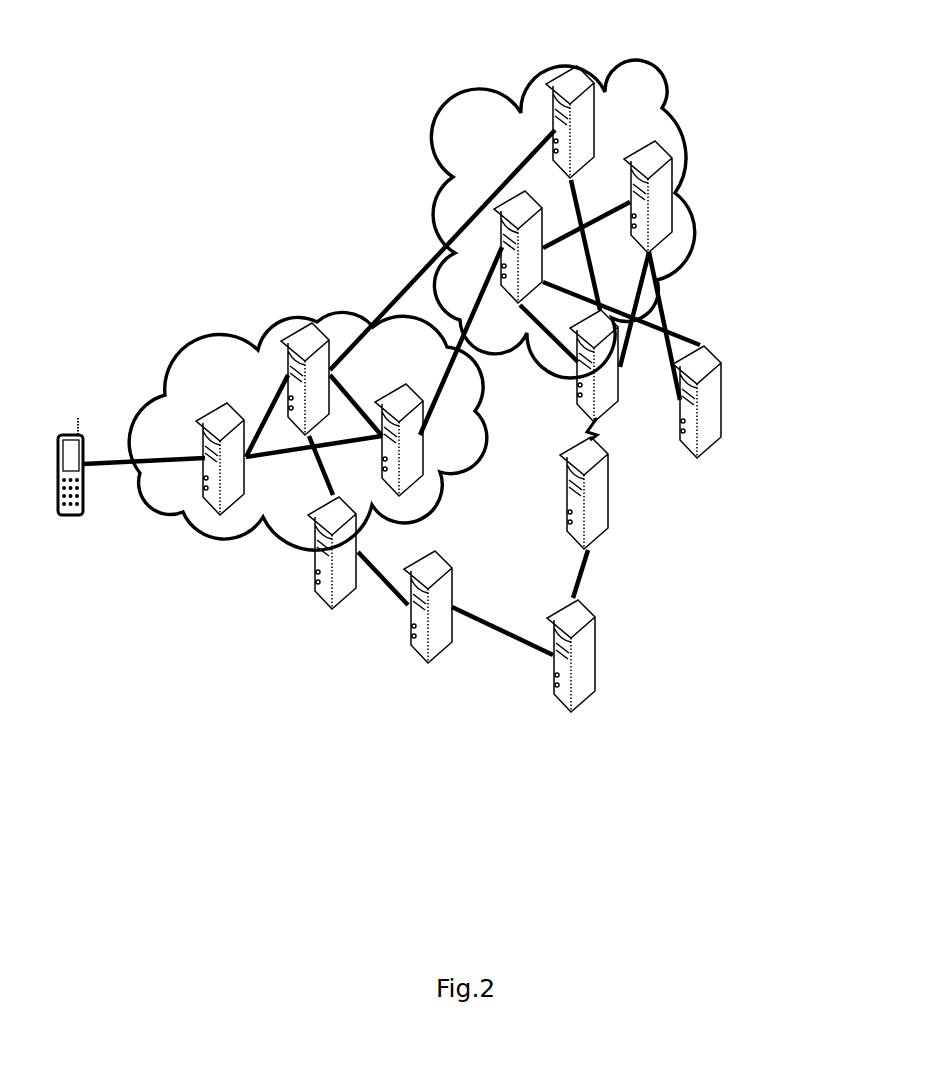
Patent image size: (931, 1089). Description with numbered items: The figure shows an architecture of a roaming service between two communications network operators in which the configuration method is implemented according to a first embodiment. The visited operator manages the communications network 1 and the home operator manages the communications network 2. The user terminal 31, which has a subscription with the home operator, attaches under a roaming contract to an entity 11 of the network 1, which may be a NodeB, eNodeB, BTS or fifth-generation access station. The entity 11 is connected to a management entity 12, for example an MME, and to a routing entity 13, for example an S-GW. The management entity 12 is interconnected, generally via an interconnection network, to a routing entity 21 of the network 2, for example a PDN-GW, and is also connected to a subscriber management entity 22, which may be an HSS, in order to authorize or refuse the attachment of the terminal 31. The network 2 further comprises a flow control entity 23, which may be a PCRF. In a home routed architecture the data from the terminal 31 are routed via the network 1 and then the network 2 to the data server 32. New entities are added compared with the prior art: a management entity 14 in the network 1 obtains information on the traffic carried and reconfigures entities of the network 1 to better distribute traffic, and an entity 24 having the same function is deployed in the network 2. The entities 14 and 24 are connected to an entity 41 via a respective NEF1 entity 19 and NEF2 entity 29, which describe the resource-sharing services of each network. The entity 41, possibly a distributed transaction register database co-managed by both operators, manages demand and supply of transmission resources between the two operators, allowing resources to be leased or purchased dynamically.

The communications network 1 is at (215, 330).
The communications network 2 is at (477, 100).
The entity 11 is at (242, 358).
The management entity 12 is at (315, 330).
The routing entity 13 is at (407, 382).
The management entity 14 is at (332, 607).
The NEF1 entity 19 is at (423, 660).
The routing entity 21 is at (580, 253).
The subscriber management entity 22 is at (566, 96).
The flow control entity 23 is at (668, 157).
The entity 24 is at (613, 403).
The NEF2 entity 29 is at (582, 547).
The terminal 31 is at (60, 422).
The data server 32 is at (713, 348).
The entity 41 is at (572, 710).